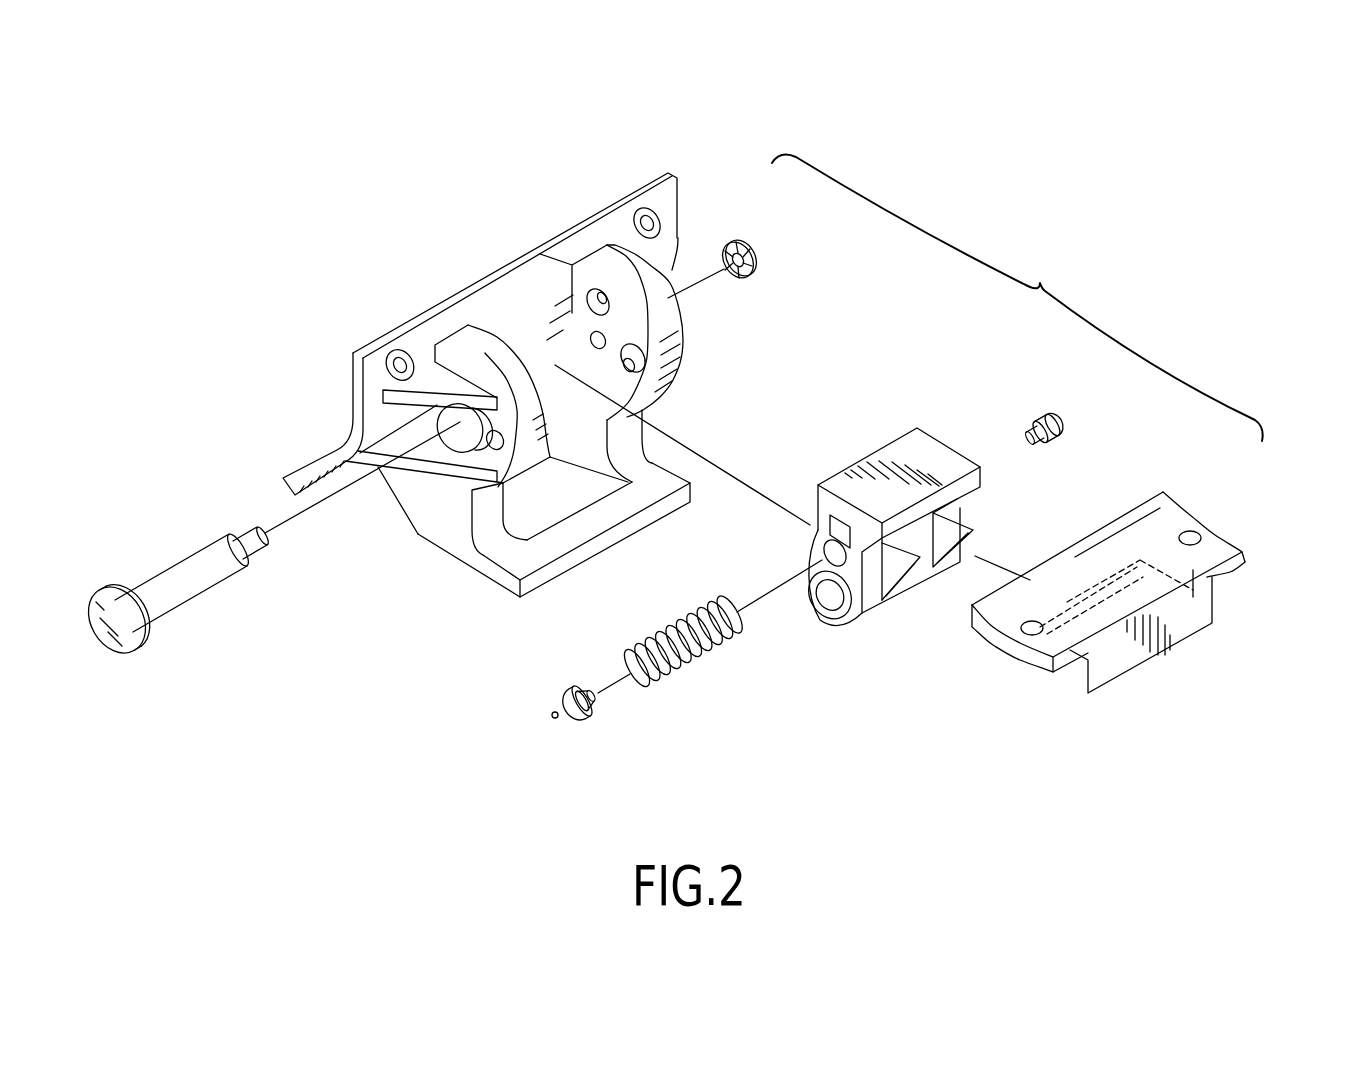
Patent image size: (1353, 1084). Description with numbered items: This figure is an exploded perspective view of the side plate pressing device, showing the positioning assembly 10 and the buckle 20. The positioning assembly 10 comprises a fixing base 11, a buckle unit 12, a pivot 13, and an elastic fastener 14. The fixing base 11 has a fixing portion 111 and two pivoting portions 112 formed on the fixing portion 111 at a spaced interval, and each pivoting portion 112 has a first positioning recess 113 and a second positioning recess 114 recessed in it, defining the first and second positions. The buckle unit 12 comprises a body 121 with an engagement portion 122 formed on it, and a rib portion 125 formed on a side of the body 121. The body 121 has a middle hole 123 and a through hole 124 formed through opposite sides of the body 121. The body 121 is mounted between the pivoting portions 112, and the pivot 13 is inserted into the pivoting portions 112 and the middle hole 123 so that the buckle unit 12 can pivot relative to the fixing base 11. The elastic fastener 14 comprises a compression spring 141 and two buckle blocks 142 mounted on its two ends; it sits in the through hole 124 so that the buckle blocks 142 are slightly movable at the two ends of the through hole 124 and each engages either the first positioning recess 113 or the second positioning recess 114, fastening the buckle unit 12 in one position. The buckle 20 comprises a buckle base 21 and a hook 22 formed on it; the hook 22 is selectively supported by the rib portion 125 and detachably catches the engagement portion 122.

The positioning assembly 10 is at (312, 343).
The fixing base 11 is at (676, 166).
The fixing portion 111 is at (517, 292).
The pivoting portions 112 is at (672, 346).
The first positioning recess 113 is at (594, 294).
The second positioning recess 114 is at (637, 367).
The buckle unit 12 is at (929, 419).
The body 121 is at (900, 597).
The engagement portion 122 is at (890, 456).
The middle hole 123 is at (825, 598).
The through hole 124 is at (825, 548).
The rib portion 125 is at (957, 530).
The pivot 13 is at (190, 565).
The elastic fastener 14 is at (695, 676).
The compression spring 141 is at (667, 632).
The buckle blocks 142 is at (1062, 432).
The buckle 20 is at (1239, 520).
The buckle base 21 is at (1168, 528).
The hook 22 is at (1072, 678).